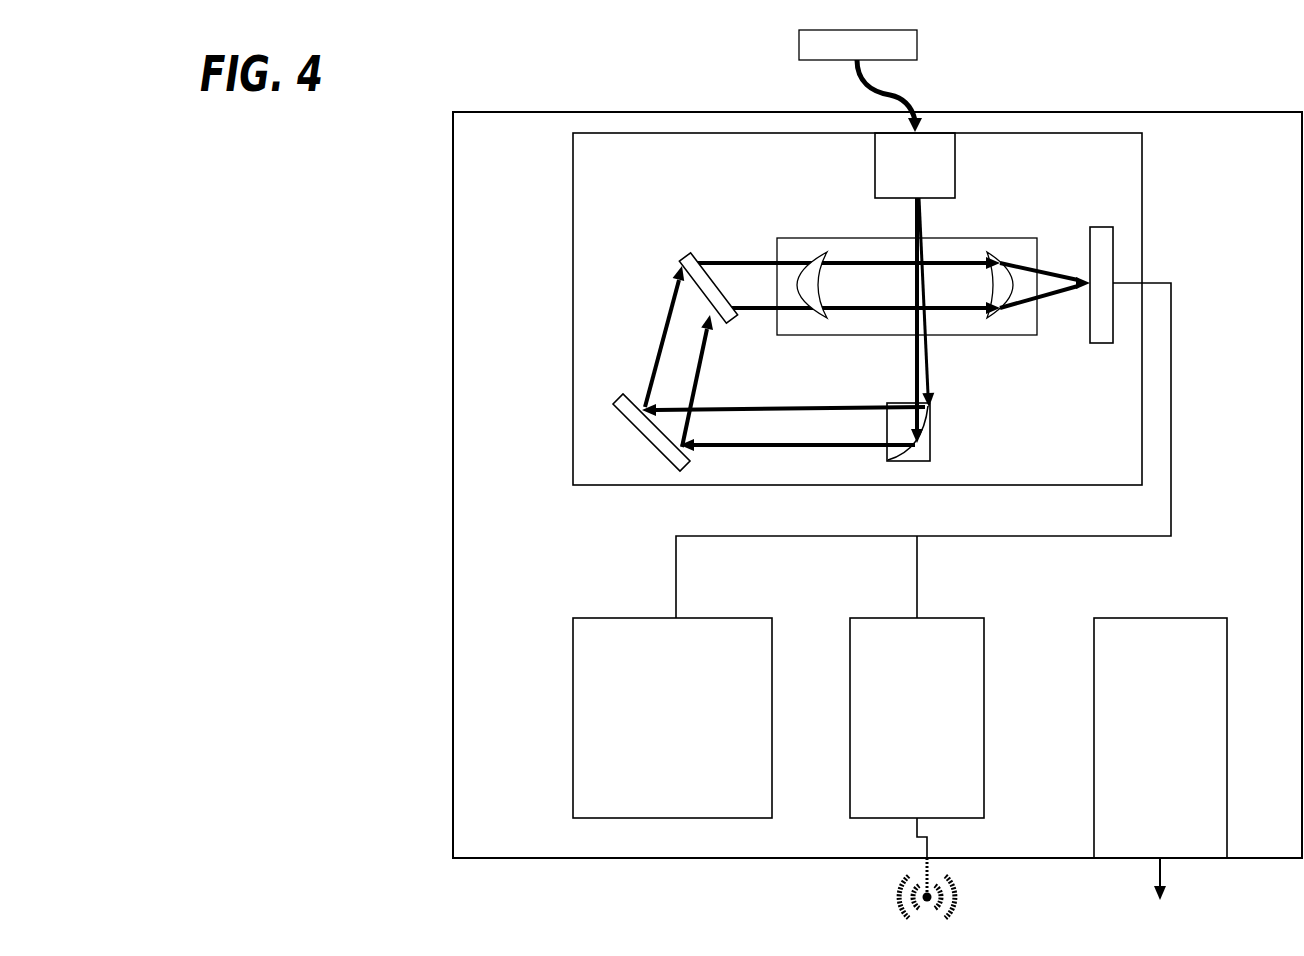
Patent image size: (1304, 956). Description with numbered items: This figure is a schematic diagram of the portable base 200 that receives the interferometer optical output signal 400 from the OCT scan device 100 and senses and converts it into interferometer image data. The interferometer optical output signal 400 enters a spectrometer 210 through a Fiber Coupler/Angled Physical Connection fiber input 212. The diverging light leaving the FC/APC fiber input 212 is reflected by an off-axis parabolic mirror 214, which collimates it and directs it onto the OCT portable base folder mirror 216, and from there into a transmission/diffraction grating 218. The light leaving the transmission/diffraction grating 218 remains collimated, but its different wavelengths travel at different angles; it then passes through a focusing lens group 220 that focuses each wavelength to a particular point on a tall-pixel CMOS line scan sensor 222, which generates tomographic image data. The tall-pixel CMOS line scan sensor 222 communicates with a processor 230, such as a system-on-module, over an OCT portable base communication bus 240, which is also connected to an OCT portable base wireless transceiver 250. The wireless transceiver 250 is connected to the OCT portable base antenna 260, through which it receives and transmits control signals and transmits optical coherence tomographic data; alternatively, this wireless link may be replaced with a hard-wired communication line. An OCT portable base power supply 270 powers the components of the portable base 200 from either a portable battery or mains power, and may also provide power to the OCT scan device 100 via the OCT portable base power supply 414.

The OCT scan device 100 is at (858, 45).
The portable base 200 is at (553, 111).
The spectrometer 210 is at (573, 175).
The FC/APC fiber input 212 is at (915, 165).
The off-axis parabolic mirror 214 is at (930, 438).
The OCT portable base folder mirror 216 is at (655, 443).
The transmission/diffraction grating 218 is at (683, 257).
The focusing lens group 220 is at (777, 240).
The tall-pixel CMOS line scan sensor 222 is at (1103, 343).
The processor 230 is at (672, 718).
The OCT portable base communication bus 240 is at (676, 549).
The OCT portable base wireless transceiver 250 is at (917, 718).
The OCT portable base antenna 260 is at (905, 889).
The OCT portable base power supply 270 is at (1160, 738).
The interferometer optical output signal 400 is at (864, 92).
The OCT portable base power supply 414 is at (1160, 876).